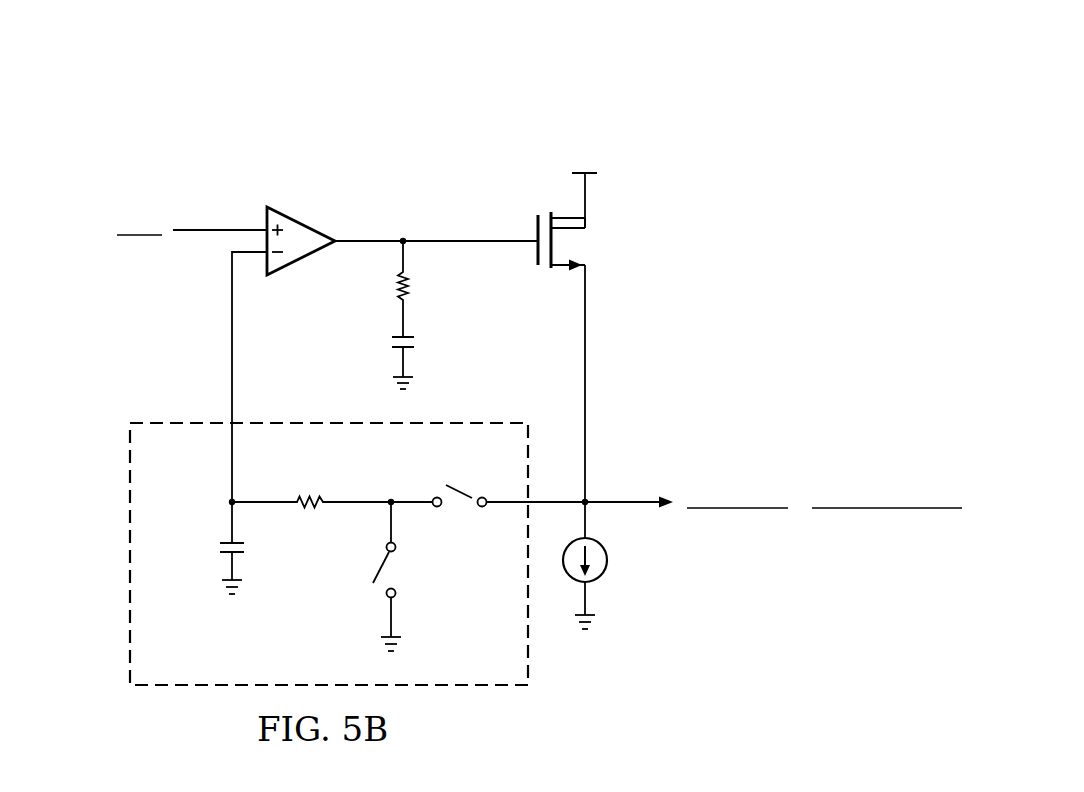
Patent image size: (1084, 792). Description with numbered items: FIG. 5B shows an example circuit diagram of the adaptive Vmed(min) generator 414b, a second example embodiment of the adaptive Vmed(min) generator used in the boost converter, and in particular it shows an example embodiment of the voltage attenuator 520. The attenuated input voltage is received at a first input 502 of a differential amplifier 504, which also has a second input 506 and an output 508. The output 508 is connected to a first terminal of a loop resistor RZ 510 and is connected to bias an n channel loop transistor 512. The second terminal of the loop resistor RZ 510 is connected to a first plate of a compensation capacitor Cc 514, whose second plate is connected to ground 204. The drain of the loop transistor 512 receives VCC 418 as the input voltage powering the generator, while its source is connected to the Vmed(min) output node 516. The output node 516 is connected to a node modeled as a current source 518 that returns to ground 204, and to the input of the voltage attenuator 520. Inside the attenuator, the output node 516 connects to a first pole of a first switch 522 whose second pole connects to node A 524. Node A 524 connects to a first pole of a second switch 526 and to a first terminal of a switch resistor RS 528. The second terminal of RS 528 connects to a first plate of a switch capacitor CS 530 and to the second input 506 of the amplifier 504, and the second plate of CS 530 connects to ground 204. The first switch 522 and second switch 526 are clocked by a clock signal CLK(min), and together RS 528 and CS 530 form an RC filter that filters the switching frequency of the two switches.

The adaptive Vmed(min) generator 414b is at (364, 132).
The first input 502 is at (210, 229).
The differential amplifier 504 is at (300, 222).
The second input 506 is at (232, 337).
The output 508 is at (367, 238).
The loop resistor RZ 510 is at (398, 284).
The loop transistor 512 is at (535, 256).
The compensation capacitor Cc 514 is at (393, 343).
The Vmed(min) output node 516 is at (628, 500).
The current source 518 is at (608, 562).
The voltage attenuator 520 is at (120, 598).
The first switch 522 is at (460, 491).
The node A 524 is at (398, 508).
The second switch 526 is at (383, 567).
The switch resistor RS 528 is at (310, 506).
The switch capacitor CS 530 is at (220, 544).
The VCC 418 is at (595, 177).
The ground 204 is at (595, 617).